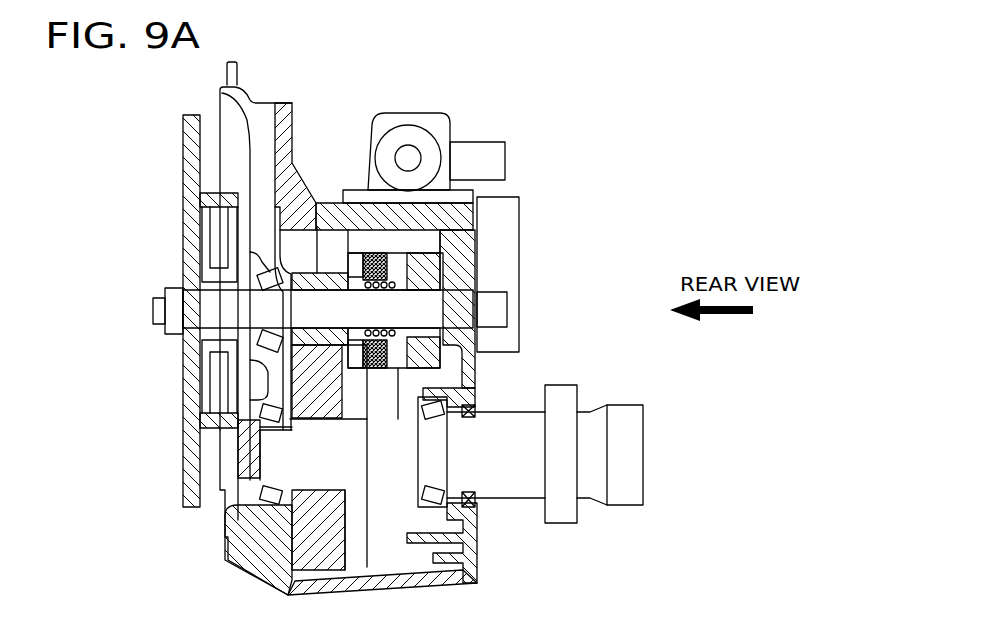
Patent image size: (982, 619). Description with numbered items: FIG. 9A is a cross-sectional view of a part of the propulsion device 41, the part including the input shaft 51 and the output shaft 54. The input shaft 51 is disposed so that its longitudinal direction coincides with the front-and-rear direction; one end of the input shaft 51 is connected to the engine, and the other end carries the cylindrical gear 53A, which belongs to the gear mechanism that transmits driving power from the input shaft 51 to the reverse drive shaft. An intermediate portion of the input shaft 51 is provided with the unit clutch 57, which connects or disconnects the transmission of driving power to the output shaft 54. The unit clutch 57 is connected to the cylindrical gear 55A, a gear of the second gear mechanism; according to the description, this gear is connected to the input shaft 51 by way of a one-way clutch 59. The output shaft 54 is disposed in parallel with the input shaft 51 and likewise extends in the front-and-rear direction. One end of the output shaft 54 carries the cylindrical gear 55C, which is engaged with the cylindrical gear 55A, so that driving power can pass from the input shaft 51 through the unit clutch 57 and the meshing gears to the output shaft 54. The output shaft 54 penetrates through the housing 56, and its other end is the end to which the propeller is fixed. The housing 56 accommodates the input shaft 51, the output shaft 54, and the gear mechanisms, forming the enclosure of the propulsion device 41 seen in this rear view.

The propulsion device 41 is at (594, 130).
The input shaft 51 is at (210, 303).
The cylindrical gear 53A is at (478, 252).
The output shaft 54 is at (373, 492).
The cylindrical gear 55A is at (297, 278).
The cylindrical gear 55C is at (334, 431).
The housing 56 is at (474, 543).
The unit clutch 57 is at (377, 382).
The bearing 59 is at (333, 334).